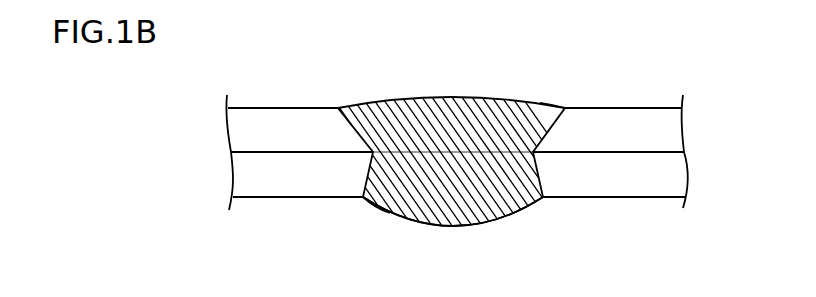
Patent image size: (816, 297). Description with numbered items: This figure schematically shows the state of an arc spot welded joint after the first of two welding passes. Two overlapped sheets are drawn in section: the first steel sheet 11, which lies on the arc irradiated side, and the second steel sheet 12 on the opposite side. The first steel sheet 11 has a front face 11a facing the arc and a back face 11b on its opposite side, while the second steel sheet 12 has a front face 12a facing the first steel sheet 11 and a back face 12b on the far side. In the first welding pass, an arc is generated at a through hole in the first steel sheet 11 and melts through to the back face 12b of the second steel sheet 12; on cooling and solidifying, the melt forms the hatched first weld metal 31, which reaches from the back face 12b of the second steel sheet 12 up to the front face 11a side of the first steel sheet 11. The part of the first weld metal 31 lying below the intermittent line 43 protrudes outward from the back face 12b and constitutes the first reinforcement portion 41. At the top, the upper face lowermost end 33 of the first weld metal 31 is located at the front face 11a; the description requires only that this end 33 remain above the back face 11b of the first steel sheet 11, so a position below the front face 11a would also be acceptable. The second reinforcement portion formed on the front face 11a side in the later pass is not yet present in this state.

The first steel sheet 11 is at (658, 127).
The second steel sheet 12 is at (663, 175).
The front face 11a is at (252, 108).
The back face 11b is at (250, 153).
The front face 12a is at (300, 152).
The back face 12b is at (303, 197).
The first weld metal 31 is at (452, 208).
The upper face lowermost end 33 is at (567, 108).
The first reinforcement portion 41 is at (497, 210).
The intermittent line 43 is at (402, 208).